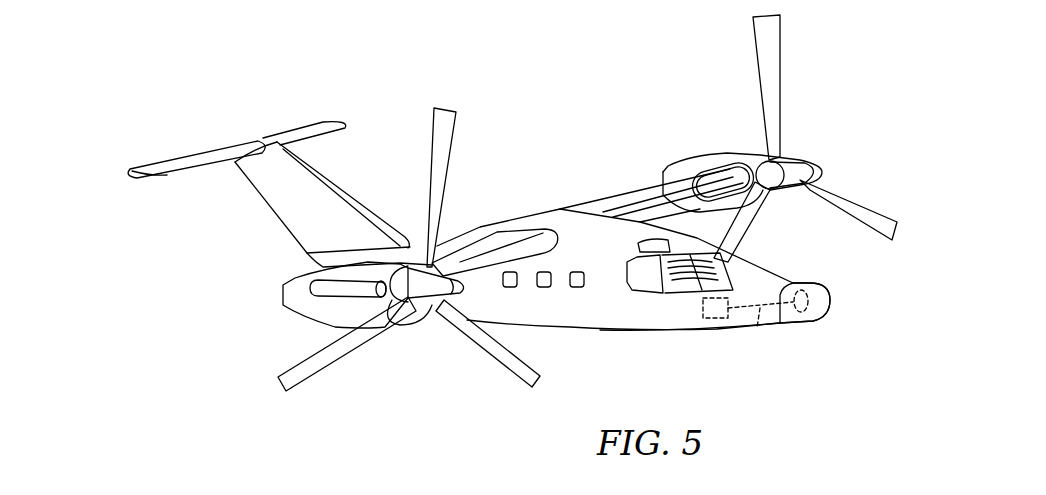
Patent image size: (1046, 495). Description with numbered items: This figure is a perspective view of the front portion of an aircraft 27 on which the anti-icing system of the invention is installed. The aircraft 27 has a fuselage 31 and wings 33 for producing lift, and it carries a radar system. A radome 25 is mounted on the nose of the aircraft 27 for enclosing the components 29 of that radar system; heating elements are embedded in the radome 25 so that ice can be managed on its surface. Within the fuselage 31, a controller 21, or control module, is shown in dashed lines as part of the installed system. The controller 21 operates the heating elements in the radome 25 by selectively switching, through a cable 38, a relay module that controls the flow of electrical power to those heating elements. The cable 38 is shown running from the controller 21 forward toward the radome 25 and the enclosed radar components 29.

The aircraft 27 is at (531, 180).
The wings 33 is at (613, 197).
The fuselage 31 is at (645, 312).
The radome 25 is at (833, 306).
The components of a radar system 29 is at (803, 290).
The controller 21 is at (700, 320).
The cable 38 is at (757, 328).